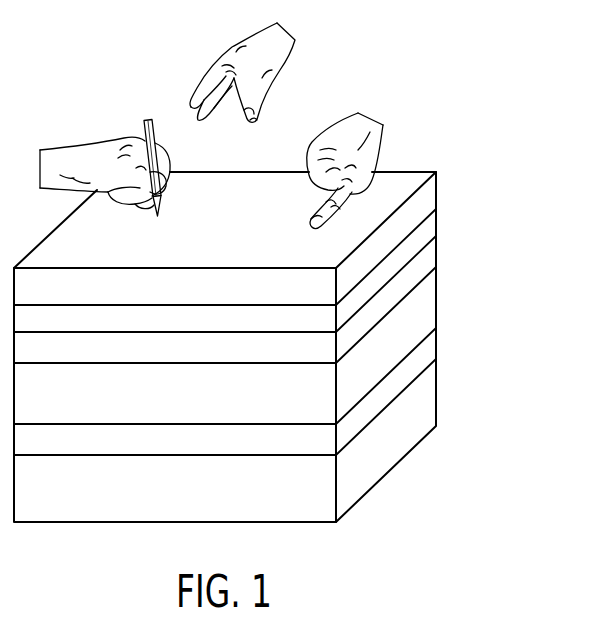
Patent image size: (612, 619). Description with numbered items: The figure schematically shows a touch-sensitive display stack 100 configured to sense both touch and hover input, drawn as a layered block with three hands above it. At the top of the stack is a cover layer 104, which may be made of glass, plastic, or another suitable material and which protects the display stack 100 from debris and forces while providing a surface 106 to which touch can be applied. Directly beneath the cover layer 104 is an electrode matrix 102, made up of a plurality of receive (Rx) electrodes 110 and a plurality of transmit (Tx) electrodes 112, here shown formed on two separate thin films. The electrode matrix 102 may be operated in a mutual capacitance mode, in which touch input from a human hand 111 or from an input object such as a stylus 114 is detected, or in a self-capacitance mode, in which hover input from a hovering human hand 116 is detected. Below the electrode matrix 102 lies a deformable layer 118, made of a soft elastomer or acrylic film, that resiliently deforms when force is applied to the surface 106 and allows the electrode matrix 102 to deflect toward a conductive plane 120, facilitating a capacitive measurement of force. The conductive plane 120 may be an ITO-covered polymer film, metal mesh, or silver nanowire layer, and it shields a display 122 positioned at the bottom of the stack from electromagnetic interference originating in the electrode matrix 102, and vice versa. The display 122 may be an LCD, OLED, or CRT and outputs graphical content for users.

The touch-sensitive display stack 100 is at (491, 297).
The electrode matrix 102 is at (345, 305).
The cover layer 104 is at (257, 298).
The surface 106 is at (400, 178).
The receive (Rx) electrodes 110 is at (202, 328).
The human hand 111 is at (377, 123).
The transmit (Tx) electrodes 112 is at (202, 358).
The stylus 114 is at (147, 120).
The hovering human hand 116 is at (296, 40).
The deformable layer 118 is at (287, 405).
The conductive plane 120 is at (285, 448).
The display 122 is at (230, 498).